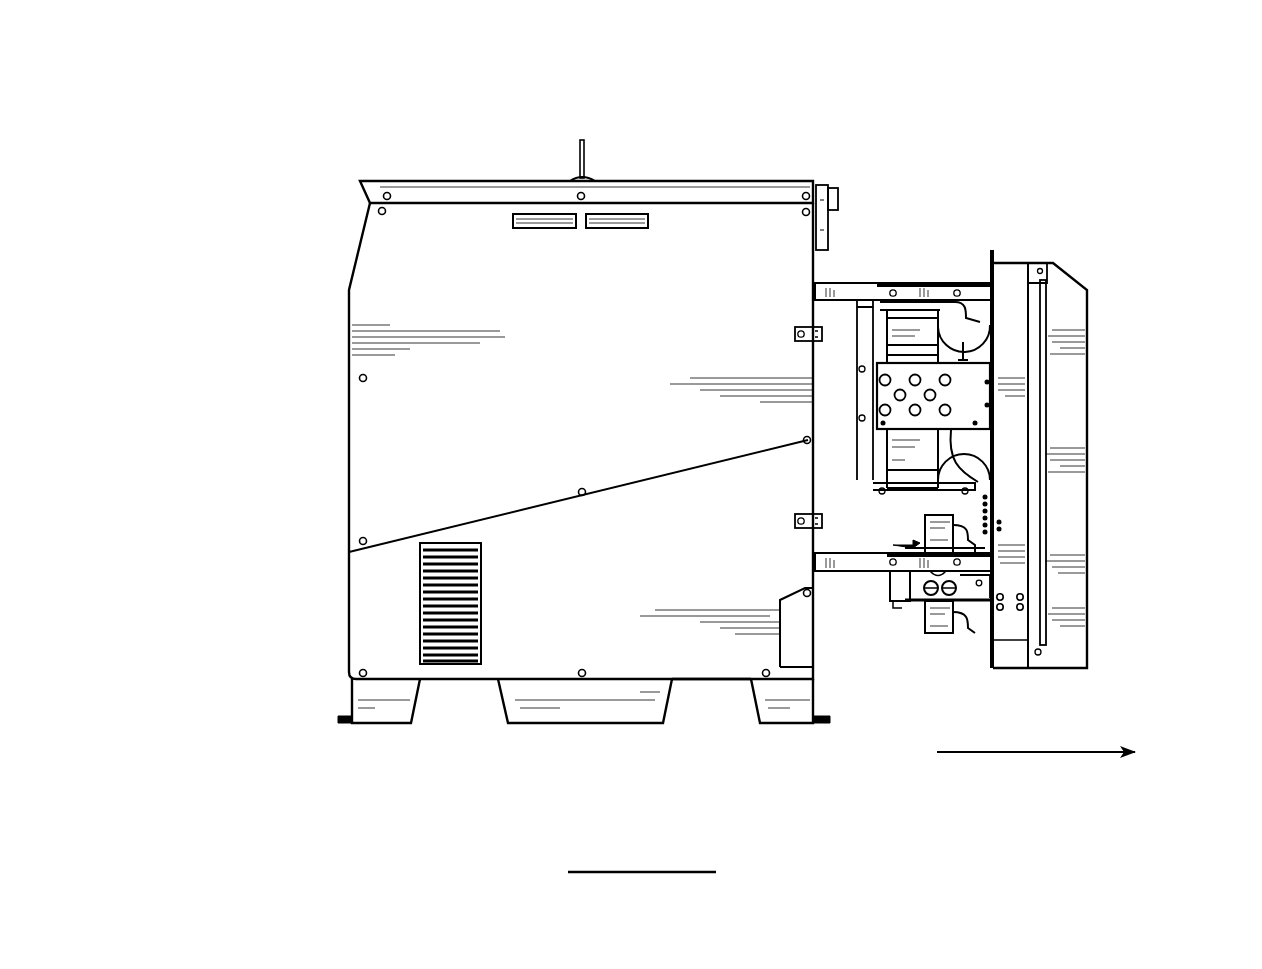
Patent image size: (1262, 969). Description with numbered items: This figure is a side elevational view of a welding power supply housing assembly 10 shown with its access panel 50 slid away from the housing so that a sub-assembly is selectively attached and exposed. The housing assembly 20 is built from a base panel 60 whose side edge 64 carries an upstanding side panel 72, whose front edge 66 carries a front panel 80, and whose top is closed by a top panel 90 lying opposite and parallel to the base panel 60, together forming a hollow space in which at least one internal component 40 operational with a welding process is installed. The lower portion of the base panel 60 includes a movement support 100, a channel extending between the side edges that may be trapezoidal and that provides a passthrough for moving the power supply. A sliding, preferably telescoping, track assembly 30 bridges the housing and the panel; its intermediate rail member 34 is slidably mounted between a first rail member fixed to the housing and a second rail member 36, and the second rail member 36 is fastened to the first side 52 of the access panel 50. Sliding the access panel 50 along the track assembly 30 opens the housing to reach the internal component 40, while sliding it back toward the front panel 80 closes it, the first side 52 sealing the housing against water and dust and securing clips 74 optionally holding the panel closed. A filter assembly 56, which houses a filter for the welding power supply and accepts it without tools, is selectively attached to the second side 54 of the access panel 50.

The welding power supply housing assembly 10 is at (1122, 193).
The housing assembly 20 is at (292, 188).
The telescoping track assembly 30 is at (912, 275).
The intermediate rail member 34 is at (868, 296).
The second rail member 36 is at (970, 297).
The internal component 40 is at (975, 580).
The access panel 50 is at (1021, 245).
The first side 52 is at (993, 647).
The second side 54 is at (1052, 556).
The filter assembly 56 is at (1097, 404).
The base panel 60 is at (497, 707).
The side edge 64 is at (568, 718).
The front edge 66 is at (347, 685).
The side panel 72 is at (556, 309).
The securing clips 74 is at (797, 521).
The front panel 80 is at (343, 424).
The top panel 90 is at (438, 178).
The movement support 100 is at (698, 690).